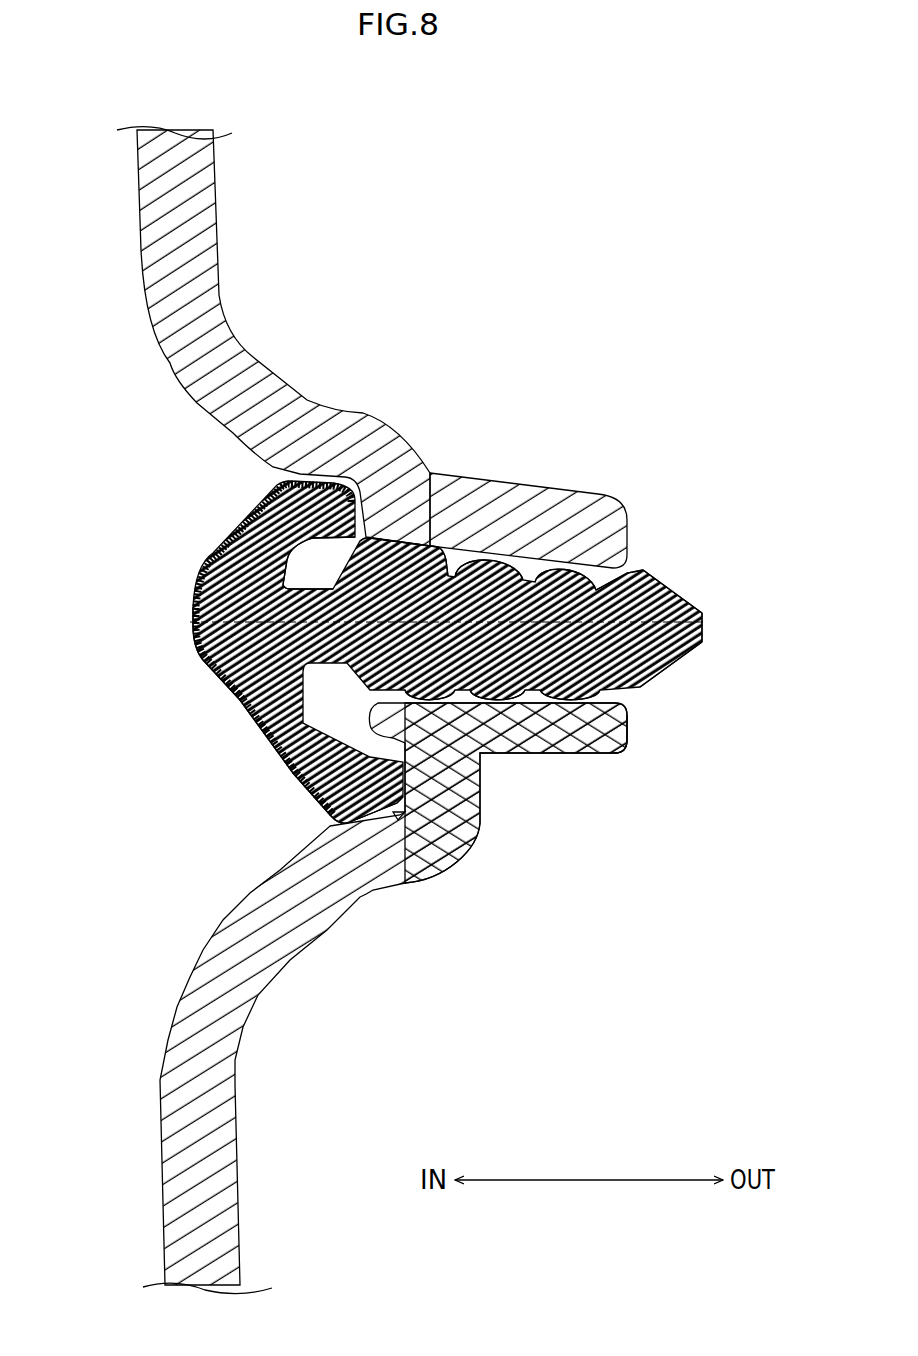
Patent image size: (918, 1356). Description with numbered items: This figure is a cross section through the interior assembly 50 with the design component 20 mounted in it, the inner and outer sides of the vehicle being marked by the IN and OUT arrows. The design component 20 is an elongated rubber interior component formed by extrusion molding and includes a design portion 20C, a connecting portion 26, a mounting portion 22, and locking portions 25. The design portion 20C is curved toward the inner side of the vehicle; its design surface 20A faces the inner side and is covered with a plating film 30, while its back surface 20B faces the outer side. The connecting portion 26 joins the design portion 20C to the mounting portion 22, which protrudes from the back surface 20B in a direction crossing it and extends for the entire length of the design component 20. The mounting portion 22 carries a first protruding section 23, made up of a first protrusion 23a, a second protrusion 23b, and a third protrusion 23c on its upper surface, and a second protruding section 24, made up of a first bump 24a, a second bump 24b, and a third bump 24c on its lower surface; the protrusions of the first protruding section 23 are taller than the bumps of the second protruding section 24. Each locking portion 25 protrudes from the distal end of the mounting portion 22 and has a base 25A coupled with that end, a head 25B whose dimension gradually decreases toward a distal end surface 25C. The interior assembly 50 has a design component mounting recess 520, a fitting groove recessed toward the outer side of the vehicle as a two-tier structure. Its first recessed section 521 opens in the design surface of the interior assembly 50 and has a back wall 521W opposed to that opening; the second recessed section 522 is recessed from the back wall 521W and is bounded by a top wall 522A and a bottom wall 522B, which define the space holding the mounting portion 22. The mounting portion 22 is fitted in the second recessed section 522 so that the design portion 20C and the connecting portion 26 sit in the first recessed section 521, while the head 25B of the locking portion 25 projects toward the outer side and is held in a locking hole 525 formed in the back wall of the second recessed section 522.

The interior assembly 50 is at (140, 203).
The design component 20 is at (456, 600).
The design surface 20A is at (192, 625).
The back surface 20B is at (290, 767).
The design portion 20C is at (233, 710).
The plating film 30 is at (190, 653).
The connecting portion 26 is at (337, 588).
The first protruding section 23 is at (478, 477).
The first protrusion 23a is at (400, 543).
The second protrusion 23b is at (482, 553).
The third protrusion 23c is at (556, 565).
The top wall 522A is at (580, 530).
The mounting portion 22 is at (630, 570).
The locking portion 25 is at (740, 620).
The base 25A is at (660, 580).
The distal end surface 25C is at (702, 630).
The head 25B is at (715, 664).
The locking hole 525 is at (628, 705).
The second protruding section 24 is at (514, 764).
The first bump 24a is at (430, 697).
The second bump 24b is at (480, 697).
The third bump 24c is at (545, 697).
The bottom wall 522B is at (560, 717).
The back wall of the first recessed section 521W is at (397, 817).
The first recessed section 521 is at (430, 832).
The second recessed section 522 is at (555, 713).
The design component mounting recess 520 is at (452, 856).